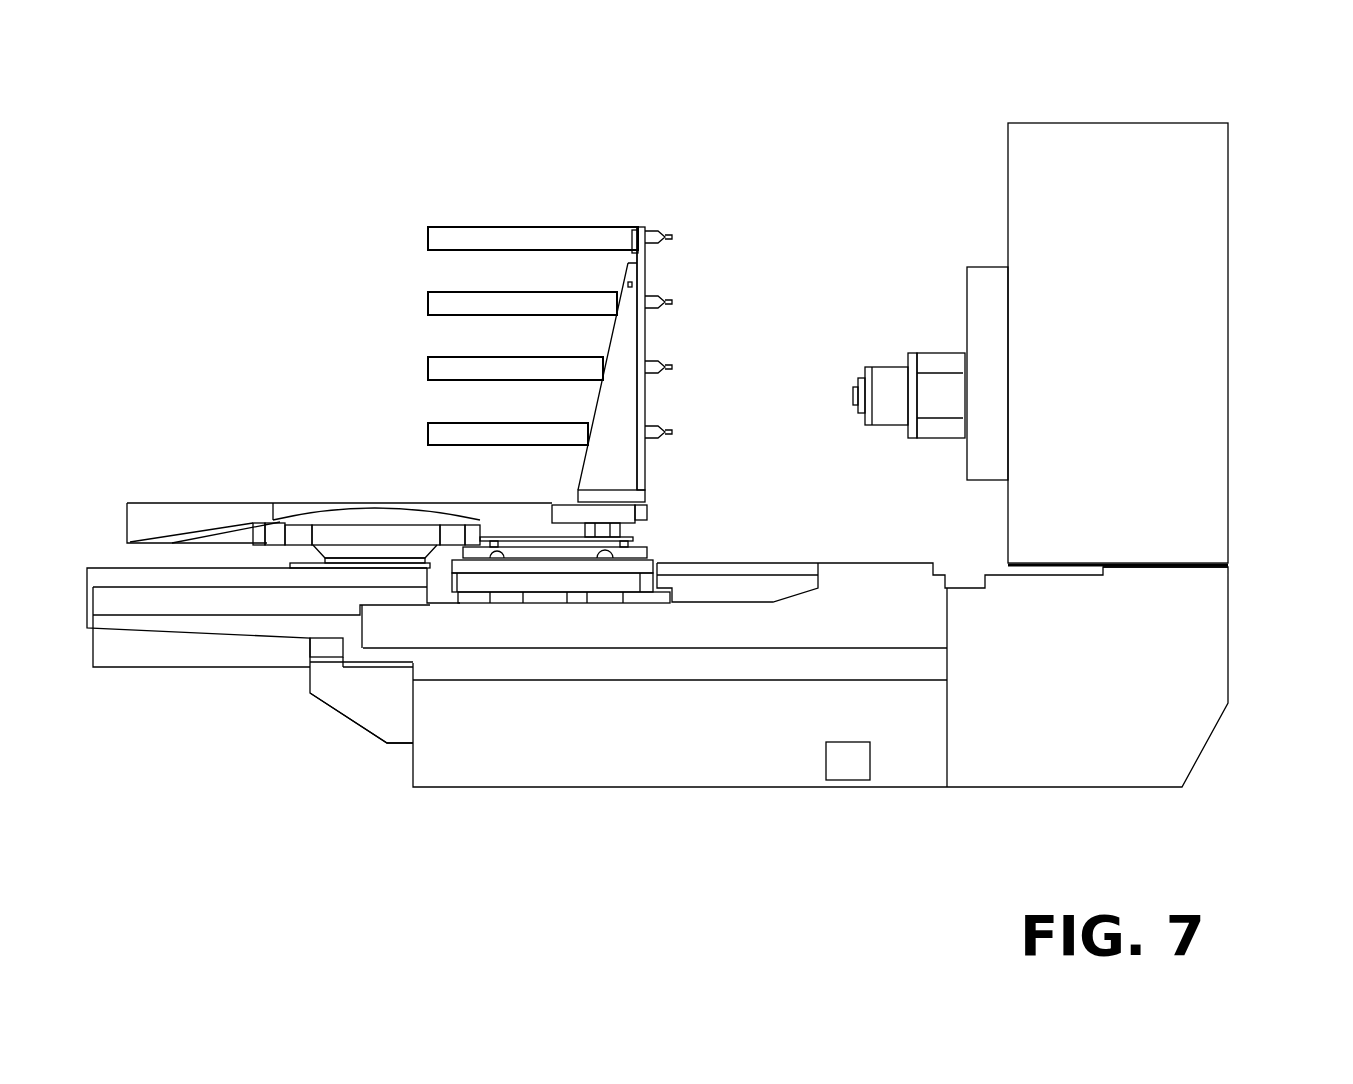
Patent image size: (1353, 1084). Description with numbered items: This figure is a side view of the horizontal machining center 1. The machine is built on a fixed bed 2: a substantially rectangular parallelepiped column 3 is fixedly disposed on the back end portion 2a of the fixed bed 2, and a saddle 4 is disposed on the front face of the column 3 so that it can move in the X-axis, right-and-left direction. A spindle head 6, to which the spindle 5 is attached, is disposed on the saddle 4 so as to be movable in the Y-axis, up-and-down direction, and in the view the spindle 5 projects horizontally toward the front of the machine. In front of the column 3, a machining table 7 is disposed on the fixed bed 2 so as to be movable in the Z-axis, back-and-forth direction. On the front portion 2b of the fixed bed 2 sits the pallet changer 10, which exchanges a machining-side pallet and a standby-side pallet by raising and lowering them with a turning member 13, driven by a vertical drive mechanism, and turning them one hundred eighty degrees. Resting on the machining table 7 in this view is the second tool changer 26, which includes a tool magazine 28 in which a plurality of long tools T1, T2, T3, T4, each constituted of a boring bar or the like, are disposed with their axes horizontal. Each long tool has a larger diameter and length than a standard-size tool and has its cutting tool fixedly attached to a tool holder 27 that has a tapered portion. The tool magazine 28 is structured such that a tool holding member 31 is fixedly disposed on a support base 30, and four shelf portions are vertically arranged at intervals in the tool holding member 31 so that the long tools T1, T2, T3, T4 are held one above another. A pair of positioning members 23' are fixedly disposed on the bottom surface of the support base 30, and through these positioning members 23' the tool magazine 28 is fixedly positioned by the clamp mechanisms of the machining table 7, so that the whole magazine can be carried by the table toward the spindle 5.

The horizontal machining center 1 is at (290, 122).
The fixed bed 2 is at (1245, 651).
The back end portion 2a is at (1200, 560).
The front portion 2b is at (408, 597).
The column 3 is at (1240, 190).
The saddle 4 is at (958, 282).
The spindle 5 is at (855, 392).
The spindle head 6 is at (922, 348).
The machining table 7 is at (652, 545).
The pallet changer 10 is at (150, 462).
The turning member 13 is at (222, 490).
The positioning members 23' is at (611, 554).
The second tool changer 26 is at (686, 178).
The tool holder 27 is at (660, 232).
The tool magazine 28 is at (656, 468).
The support base 30 is at (647, 515).
The tool holding member 31 is at (648, 338).
The long tool T1 is at (445, 227).
The long tool T2 is at (445, 292).
The long tool T3 is at (445, 357).
The long tool T4 is at (445, 423).